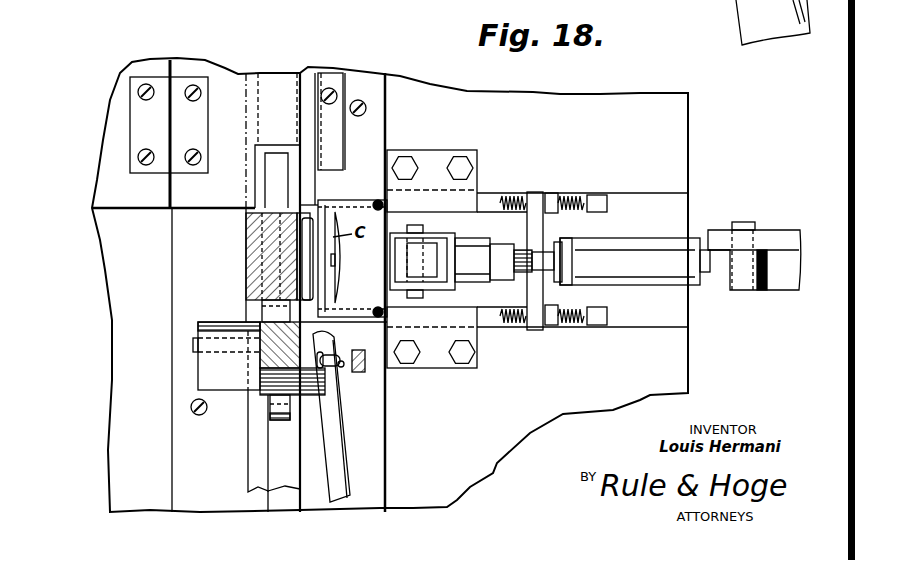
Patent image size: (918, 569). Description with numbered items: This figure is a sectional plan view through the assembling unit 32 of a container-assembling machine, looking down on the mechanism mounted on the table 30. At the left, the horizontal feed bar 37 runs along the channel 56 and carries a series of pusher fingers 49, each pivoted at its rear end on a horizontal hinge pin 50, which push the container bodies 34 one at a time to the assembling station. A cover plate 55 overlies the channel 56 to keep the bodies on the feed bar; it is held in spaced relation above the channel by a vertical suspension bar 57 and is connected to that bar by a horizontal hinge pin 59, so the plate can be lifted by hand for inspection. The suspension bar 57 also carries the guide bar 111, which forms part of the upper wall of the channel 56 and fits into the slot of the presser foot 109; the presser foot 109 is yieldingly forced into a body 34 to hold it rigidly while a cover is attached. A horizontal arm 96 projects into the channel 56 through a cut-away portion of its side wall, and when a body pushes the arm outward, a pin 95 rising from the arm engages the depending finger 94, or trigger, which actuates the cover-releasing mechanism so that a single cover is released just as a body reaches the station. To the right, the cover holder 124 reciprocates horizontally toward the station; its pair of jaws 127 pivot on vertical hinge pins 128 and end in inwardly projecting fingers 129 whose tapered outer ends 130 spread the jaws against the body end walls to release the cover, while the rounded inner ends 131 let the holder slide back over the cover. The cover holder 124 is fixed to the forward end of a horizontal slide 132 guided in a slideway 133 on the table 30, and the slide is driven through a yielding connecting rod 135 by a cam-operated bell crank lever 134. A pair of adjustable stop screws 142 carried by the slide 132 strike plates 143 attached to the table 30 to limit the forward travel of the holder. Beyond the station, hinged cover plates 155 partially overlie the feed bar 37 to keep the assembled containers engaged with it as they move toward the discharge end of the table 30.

The table 30 is at (677, 112).
The assembling unit 32 is at (508, 139).
The container body 34 is at (247, 245).
The horizontal feed bar 37 is at (272, 455).
The pusher finger 49 is at (277, 395).
The horizontal hinge pin 50 is at (267, 405).
The cover plate 55 is at (210, 370).
The channel 56 is at (253, 312).
The vertical suspension bar 57 is at (300, 352).
The horizontal hinge pin 59 is at (198, 345).
The finger 94 is at (363, 370).
The pin 95 is at (342, 367).
The horizontal arm 96 is at (338, 447).
The presser foot 109 is at (260, 227).
The guide bar 111 is at (278, 175).
The cover holder 124 is at (392, 223).
The jaw 127 is at (352, 205).
The vertical hinge pin 128 is at (383, 205).
The finger 129 is at (322, 203).
The tapered outer end 130 is at (318, 313).
The rounded inner end 131 is at (327, 307).
The horizontal slide 132 is at (486, 217).
The slideway 133 is at (643, 202).
The bell crank lever 134 is at (776, 237).
The yielding connecting rod 135 is at (652, 253).
The adjustable stop screw 142 is at (582, 191).
The plate 143 is at (437, 157).
The hinged cover plate 155 is at (233, 78).